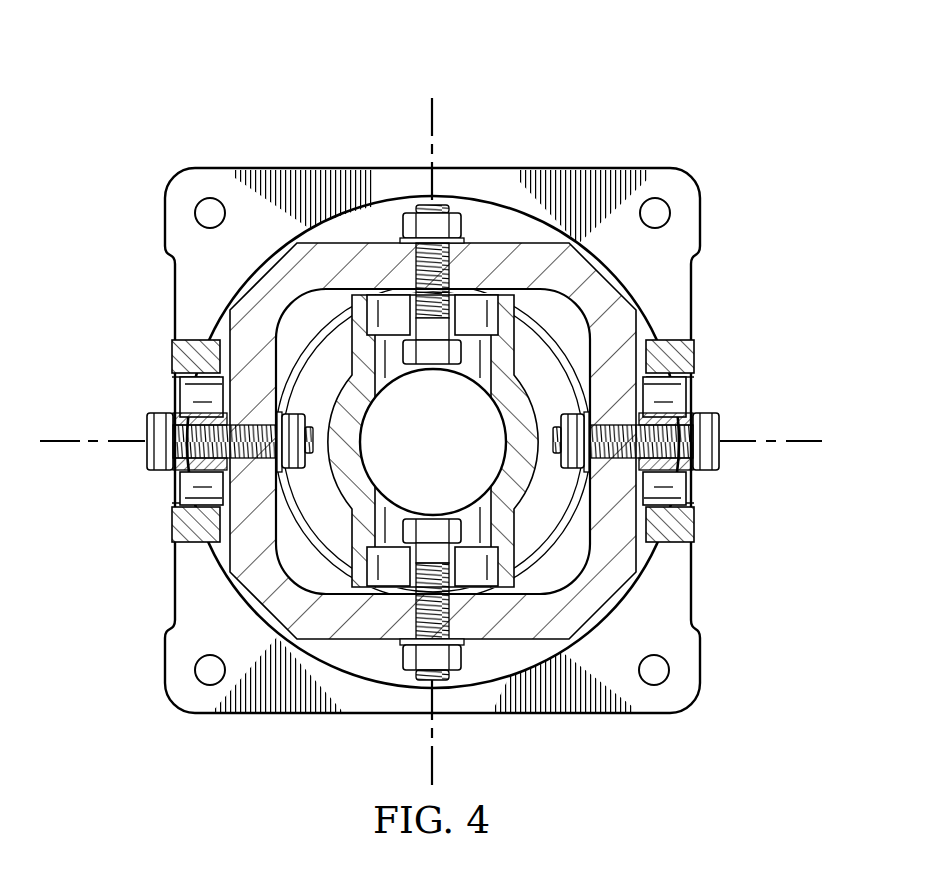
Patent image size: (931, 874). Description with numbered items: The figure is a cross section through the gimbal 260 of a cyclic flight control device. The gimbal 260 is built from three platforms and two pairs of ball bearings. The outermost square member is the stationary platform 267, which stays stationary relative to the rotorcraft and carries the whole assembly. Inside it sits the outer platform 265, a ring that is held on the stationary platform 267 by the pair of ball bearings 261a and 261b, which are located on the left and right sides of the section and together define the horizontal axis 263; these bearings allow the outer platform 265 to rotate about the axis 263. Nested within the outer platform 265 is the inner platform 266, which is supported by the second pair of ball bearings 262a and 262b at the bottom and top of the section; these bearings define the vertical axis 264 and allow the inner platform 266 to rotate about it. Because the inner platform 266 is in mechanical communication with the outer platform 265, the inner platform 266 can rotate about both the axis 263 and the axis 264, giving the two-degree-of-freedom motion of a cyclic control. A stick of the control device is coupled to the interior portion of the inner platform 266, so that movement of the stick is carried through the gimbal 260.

The gimbal 260 is at (506, 84).
The ball bearing 261a is at (183, 473).
The ball bearing 261b is at (665, 471).
The ball bearing 262a is at (462, 551).
The ball bearing 262b is at (458, 328).
The axis 263 is at (60, 441).
The axis 264 is at (428, 117).
The outer platform 265 is at (258, 601).
The inner platform 266 is at (513, 535).
The stationary platform 267 is at (175, 297).